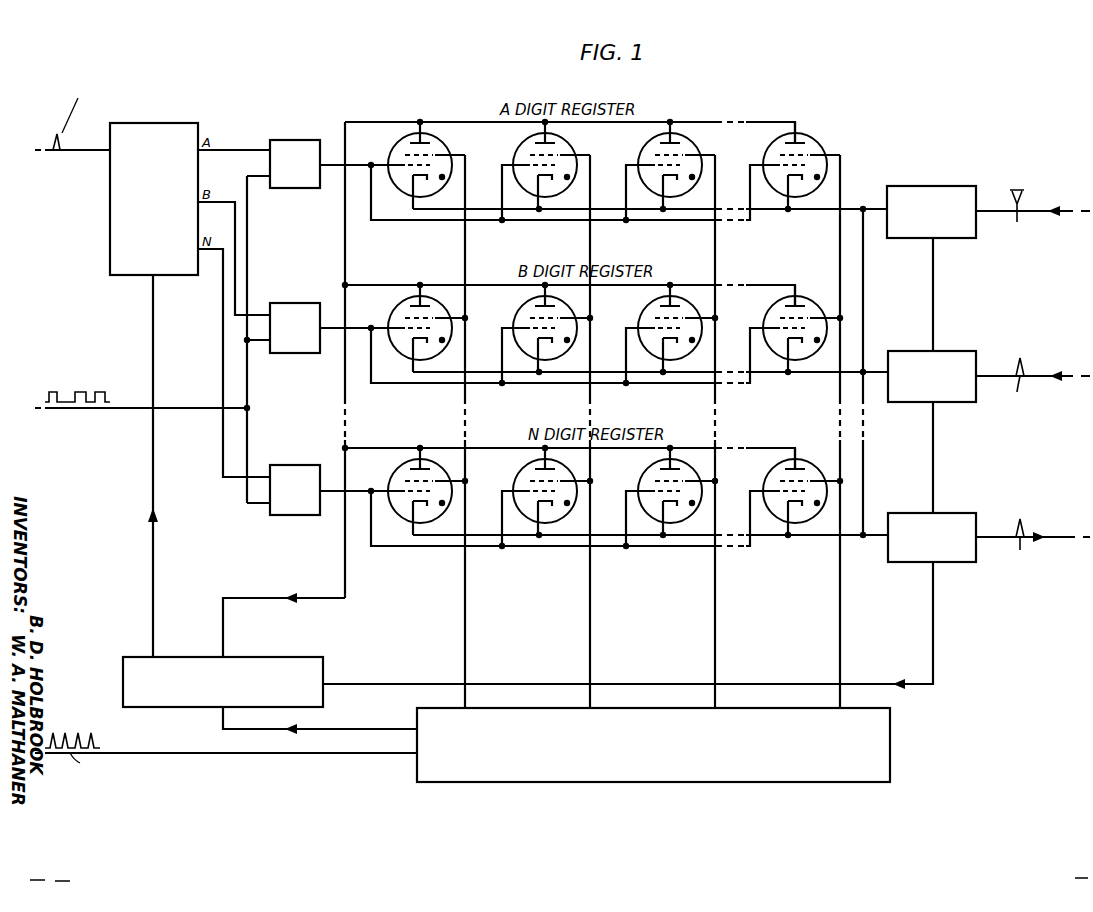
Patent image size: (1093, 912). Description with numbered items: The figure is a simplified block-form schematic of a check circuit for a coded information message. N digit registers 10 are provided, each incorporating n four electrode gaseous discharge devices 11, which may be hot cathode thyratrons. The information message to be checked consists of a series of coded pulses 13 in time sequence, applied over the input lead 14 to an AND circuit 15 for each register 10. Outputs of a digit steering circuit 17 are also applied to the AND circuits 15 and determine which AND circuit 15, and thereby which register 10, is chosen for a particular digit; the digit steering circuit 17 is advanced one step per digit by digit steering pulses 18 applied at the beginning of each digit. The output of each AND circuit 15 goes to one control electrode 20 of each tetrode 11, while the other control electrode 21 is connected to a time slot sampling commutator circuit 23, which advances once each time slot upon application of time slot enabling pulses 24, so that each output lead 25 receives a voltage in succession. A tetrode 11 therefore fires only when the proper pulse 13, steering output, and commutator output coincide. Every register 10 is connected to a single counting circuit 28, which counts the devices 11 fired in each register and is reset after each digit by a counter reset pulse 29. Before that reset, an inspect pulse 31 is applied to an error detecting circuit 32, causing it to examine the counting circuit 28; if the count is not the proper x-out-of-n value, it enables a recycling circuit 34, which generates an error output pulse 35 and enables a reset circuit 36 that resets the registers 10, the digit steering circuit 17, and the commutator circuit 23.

The digit register 10 is at (686, 123).
The four electrode gaseous discharge device 11 is at (830, 458).
The coded pulses 13 is at (80, 386).
The input lead 14 is at (180, 410).
The AND circuit 15 is at (288, 189).
The digit steering circuit 17 is at (110, 239).
The digit steering pulses 18 is at (63, 142).
The control electrode 20 is at (783, 161).
The control electrode 21 is at (785, 152).
The time slot sampling commutator circuit 23 is at (890, 740).
The time slot enabling pulses 24 is at (70, 733).
The output lead 25 is at (858, 649).
The counting circuit 28 is at (930, 186).
The counter reset pulse 29 is at (1023, 195).
The inspect pulse 31 is at (1025, 362).
The error detecting circuit 32 is at (949, 351).
The recycling circuit 34 is at (944, 513).
The error output pulse 35 is at (1027, 523).
The reset circuit 36 is at (278, 657).